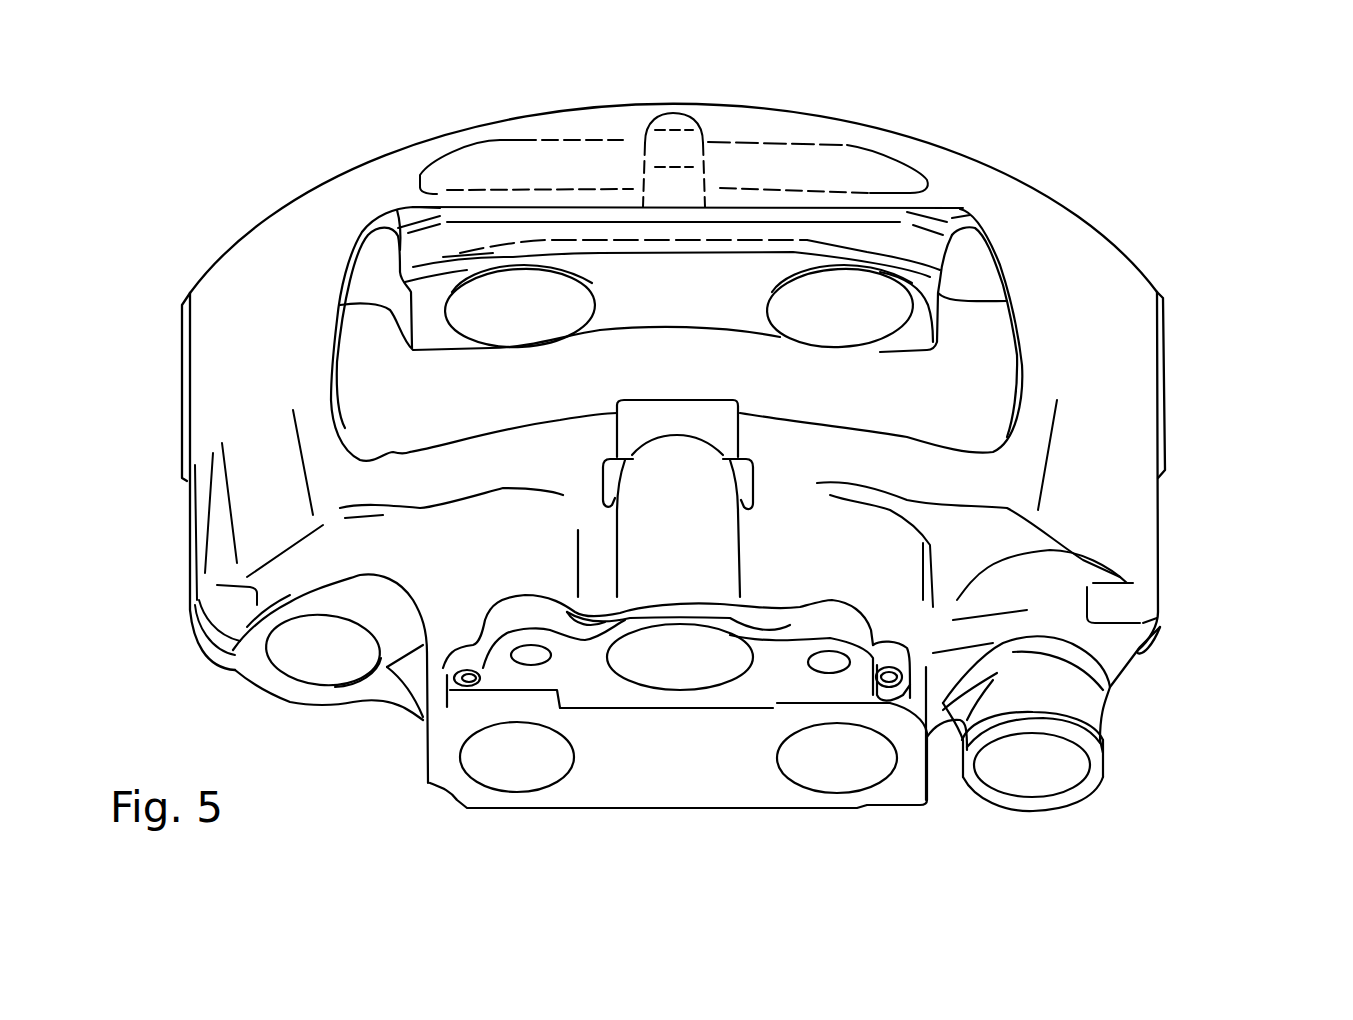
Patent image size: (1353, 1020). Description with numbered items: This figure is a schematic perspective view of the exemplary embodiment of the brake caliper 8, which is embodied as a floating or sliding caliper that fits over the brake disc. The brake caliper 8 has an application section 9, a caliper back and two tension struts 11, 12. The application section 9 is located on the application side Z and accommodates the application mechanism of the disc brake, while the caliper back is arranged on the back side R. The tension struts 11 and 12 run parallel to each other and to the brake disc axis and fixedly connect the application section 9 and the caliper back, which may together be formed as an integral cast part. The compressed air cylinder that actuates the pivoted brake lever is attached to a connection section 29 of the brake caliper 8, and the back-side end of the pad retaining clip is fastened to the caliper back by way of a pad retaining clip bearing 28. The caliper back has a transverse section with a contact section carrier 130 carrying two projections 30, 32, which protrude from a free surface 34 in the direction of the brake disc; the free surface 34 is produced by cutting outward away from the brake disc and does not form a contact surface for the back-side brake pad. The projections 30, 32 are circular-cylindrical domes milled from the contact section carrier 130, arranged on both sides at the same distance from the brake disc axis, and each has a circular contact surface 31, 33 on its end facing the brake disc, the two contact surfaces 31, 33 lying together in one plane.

The brake caliper 8 is at (1043, 190).
The application section 9 is at (1117, 552).
The tension strut 11 is at (257, 385).
The tension strut 12 is at (1113, 330).
The pad retaining clip bearing 28 is at (663, 148).
The connection section 29 is at (567, 677).
The projection 30 is at (437, 308).
The contact surface 31 is at (413, 220).
The projection 32 is at (917, 300).
The contact surface 33 is at (863, 310).
The free surface 34 is at (737, 287).
The contact section carrier 130 is at (593, 232).
The back side R is at (1183, 268).
The application side Z is at (1197, 628).